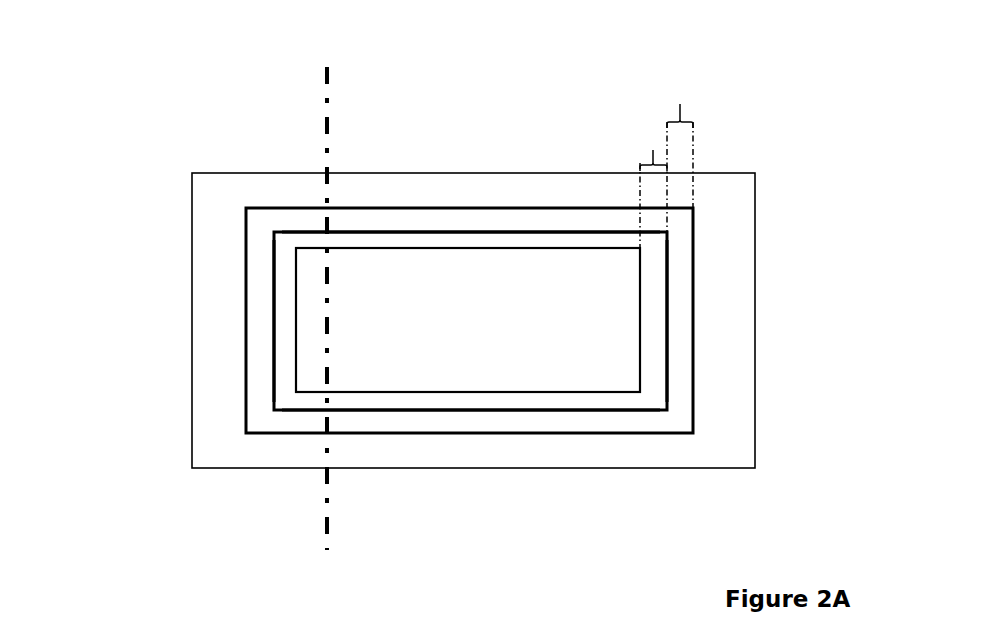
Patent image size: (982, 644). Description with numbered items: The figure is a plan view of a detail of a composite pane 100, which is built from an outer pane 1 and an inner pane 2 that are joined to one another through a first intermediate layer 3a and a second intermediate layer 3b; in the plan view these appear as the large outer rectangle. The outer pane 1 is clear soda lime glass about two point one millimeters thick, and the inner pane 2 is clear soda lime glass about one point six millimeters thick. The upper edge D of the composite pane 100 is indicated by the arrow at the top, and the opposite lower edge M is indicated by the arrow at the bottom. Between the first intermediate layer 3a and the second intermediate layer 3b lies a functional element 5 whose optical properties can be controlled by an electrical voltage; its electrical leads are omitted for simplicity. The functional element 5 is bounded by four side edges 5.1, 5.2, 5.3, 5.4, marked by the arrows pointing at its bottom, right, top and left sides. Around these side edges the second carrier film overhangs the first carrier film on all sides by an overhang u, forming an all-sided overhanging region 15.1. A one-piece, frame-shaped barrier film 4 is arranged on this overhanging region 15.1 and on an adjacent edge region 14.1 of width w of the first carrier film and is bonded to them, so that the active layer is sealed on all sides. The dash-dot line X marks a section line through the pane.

The composite pane 100 is at (230, 84).
The outer pane 1 is at (403, 287).
The inner pane 2 is at (403, 287).
The first intermediate layer 3a is at (403, 287).
The second intermediate layer 3b is at (192, 182).
The barrier film 4 is at (246, 347).
The functional element 5 is at (274, 283).
The side edge 5.1 is at (413, 423).
The side edge 5.2 is at (680, 385).
The side edge 5.3 is at (413, 220).
The side edge 5.4 is at (262, 385).
The edge region 14.1 is at (655, 337).
The overhanging region 15.1 is at (682, 272).
The width w is at (653, 142).
The overhang u is at (680, 99).
The section axis X-X' X is at (329, 311).
The upper edge D is at (503, 134).
The lower edge M is at (607, 497).